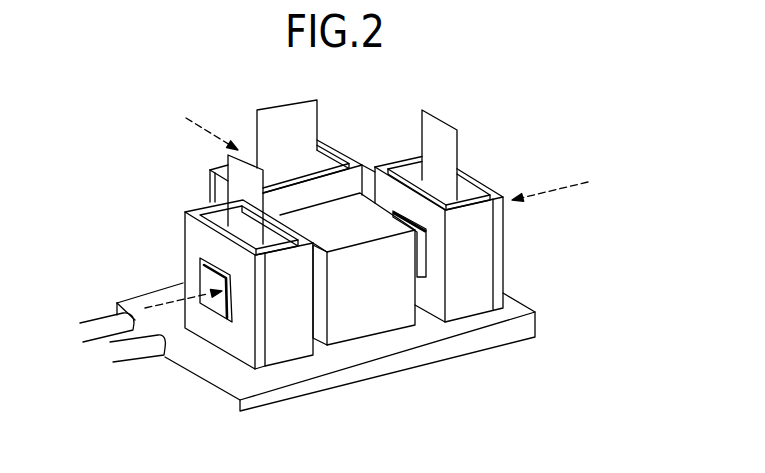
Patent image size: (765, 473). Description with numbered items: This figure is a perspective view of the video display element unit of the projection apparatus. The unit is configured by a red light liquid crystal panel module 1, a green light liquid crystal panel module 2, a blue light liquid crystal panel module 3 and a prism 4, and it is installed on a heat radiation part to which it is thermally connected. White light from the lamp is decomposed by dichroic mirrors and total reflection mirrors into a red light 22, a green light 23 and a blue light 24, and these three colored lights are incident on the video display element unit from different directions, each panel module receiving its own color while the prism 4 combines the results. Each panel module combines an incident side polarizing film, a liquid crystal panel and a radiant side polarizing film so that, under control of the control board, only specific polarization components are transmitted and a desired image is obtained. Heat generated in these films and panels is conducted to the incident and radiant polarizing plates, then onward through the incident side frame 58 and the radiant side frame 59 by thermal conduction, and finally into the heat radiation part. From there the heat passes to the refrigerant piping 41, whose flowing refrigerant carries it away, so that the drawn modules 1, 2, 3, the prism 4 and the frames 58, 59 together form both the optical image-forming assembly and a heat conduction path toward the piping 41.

The red light liquid crystal panel module 1 is at (217, 320).
The green light liquid crystal panel module 2 is at (191, 176).
The blue light liquid crystal panel module 3 is at (484, 161).
The prism 4 is at (378, 316).
The red light 22 is at (157, 301).
The green light 23 is at (200, 124).
The blue light 24 is at (552, 193).
The refrigerant piping 41 is at (141, 360).
The incident side frame 58 is at (216, 330).
The radiant side frame 59 is at (287, 338).